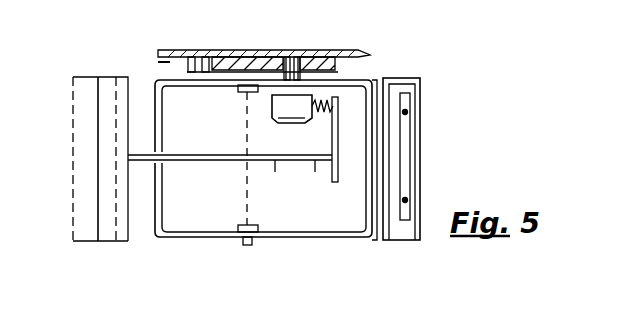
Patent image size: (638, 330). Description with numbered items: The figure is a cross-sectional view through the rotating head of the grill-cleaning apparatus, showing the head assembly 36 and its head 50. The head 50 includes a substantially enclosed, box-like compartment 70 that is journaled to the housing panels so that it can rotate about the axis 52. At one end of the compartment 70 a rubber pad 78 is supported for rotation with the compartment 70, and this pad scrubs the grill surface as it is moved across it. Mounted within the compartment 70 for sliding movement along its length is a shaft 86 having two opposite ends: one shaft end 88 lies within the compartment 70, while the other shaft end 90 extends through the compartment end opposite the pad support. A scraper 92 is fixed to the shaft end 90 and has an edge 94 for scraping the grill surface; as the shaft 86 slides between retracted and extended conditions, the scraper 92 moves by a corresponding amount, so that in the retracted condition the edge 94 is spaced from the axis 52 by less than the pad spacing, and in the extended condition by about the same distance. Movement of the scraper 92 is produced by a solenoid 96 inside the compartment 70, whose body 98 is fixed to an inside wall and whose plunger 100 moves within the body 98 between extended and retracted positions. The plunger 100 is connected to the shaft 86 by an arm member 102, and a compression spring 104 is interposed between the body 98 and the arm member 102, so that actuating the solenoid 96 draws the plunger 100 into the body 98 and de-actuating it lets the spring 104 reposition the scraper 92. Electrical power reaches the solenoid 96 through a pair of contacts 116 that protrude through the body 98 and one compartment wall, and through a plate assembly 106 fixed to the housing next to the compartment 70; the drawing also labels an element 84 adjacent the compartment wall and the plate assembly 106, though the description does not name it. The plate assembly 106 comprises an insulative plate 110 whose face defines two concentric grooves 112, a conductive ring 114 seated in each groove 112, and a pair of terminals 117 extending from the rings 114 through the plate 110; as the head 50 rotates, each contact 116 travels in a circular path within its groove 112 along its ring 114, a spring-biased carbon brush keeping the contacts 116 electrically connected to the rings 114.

The head assembly 36 is at (456, 164).
The head 50 is at (345, 238).
The axis 52 is at (245, 255).
The compartment 70 is at (190, 240).
The rubber pad 78 is at (410, 84).
The slot plate 84 is at (380, 92).
The shaft 86 is at (278, 177).
The shaft end 88 is at (314, 177).
The shaft end 90 is at (150, 161).
The scraper 92 is at (107, 243).
The edge 94 is at (75, 168).
The solenoid 96 is at (322, 100).
The body 98 is at (280, 108).
The plunger 100 is at (375, 95).
The arm member 102 is at (340, 130).
The compression spring 104 is at (326, 112).
The plate assembly 106 is at (172, 62).
The plate 110 is at (235, 58).
The grooves 112 is at (188, 63).
The conductive rings 114 is at (208, 68).
The contacts 116 is at (286, 72).
The terminals 117 is at (291, 55).